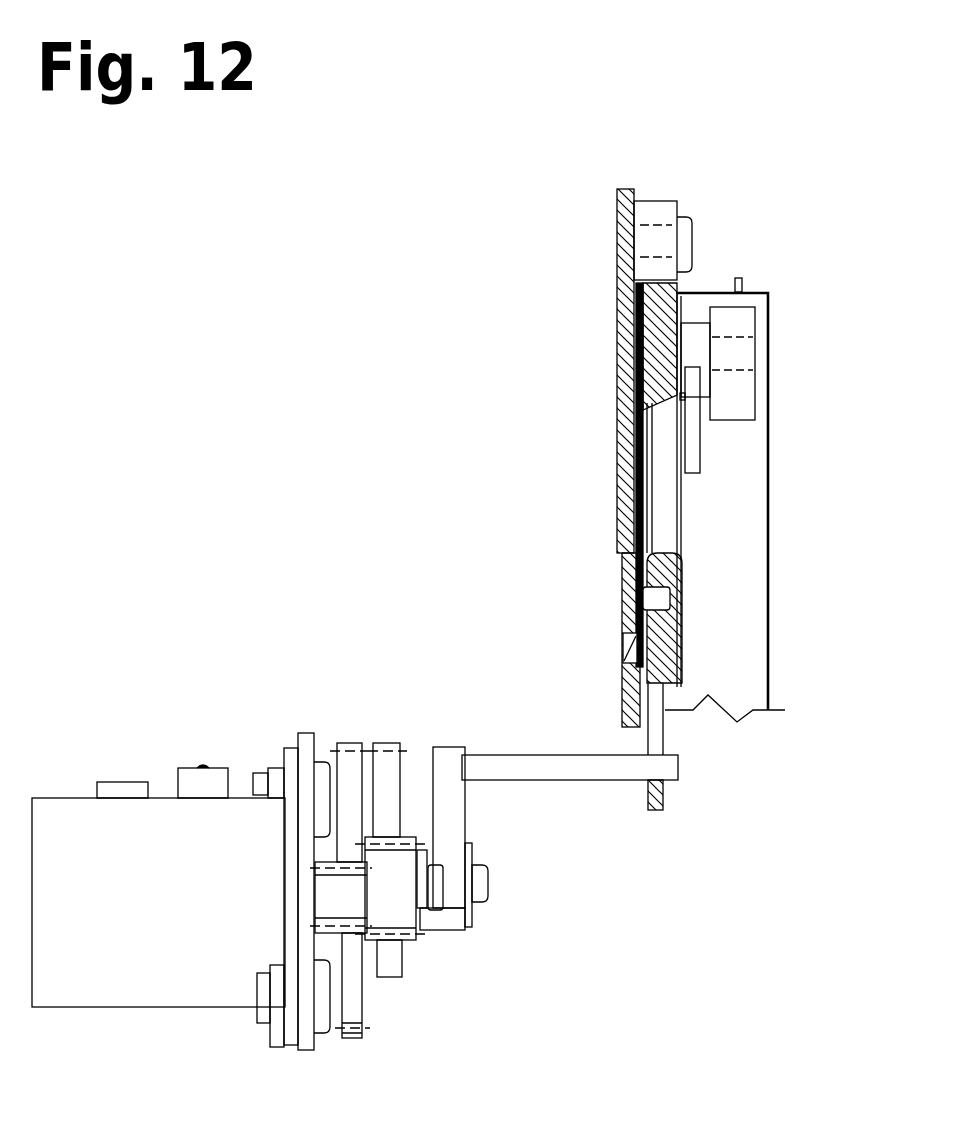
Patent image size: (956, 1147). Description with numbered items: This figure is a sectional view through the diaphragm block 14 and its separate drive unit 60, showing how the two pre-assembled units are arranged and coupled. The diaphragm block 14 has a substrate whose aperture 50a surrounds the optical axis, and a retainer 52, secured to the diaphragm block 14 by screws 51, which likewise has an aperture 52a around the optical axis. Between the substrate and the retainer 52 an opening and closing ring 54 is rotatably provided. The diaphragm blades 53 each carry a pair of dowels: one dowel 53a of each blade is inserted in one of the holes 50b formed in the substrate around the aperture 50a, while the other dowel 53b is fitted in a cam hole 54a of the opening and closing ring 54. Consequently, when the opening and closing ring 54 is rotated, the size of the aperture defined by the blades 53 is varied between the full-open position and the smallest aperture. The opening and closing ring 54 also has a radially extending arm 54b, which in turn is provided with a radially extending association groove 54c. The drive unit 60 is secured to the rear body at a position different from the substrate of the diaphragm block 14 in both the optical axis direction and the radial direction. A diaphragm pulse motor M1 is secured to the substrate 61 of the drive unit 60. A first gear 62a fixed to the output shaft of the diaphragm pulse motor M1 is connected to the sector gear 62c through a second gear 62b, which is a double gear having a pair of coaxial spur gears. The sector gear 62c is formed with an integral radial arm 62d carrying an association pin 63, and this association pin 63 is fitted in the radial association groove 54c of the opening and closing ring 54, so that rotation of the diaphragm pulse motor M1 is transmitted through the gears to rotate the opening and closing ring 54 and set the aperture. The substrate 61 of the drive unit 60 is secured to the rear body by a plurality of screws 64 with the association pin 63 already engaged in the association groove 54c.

The diaphragm block 14 is at (577, 213).
The screws 51 is at (683, 247).
The retainer 52 is at (682, 333).
The aperture 52a is at (700, 436).
The diaphragm blades 53 is at (625, 472).
The dowels 53a is at (622, 658).
The dowels 53b is at (660, 600).
The opening and closing ring 54 is at (627, 334).
The cam holes 54a is at (652, 540).
The arm 54b is at (657, 812).
The association groove 54c is at (657, 736).
The aperture 50a is at (618, 425).
The holes 50b is at (622, 642).
The drive unit 60 is at (480, 1010).
The substrate 61 is at (303, 753).
The first gear 62a is at (347, 902).
The second gear 62b is at (393, 907).
The sector gear 62c is at (385, 777).
The radial arm 62d is at (440, 773).
The association pin 63 is at (572, 772).
The screws 64 is at (325, 1003).
The diaphragm pulse motor M1 is at (153, 983).